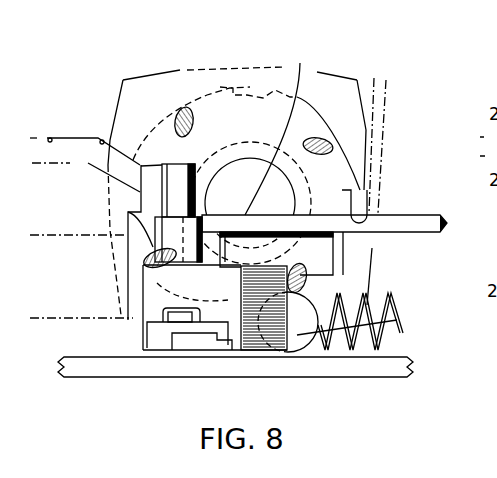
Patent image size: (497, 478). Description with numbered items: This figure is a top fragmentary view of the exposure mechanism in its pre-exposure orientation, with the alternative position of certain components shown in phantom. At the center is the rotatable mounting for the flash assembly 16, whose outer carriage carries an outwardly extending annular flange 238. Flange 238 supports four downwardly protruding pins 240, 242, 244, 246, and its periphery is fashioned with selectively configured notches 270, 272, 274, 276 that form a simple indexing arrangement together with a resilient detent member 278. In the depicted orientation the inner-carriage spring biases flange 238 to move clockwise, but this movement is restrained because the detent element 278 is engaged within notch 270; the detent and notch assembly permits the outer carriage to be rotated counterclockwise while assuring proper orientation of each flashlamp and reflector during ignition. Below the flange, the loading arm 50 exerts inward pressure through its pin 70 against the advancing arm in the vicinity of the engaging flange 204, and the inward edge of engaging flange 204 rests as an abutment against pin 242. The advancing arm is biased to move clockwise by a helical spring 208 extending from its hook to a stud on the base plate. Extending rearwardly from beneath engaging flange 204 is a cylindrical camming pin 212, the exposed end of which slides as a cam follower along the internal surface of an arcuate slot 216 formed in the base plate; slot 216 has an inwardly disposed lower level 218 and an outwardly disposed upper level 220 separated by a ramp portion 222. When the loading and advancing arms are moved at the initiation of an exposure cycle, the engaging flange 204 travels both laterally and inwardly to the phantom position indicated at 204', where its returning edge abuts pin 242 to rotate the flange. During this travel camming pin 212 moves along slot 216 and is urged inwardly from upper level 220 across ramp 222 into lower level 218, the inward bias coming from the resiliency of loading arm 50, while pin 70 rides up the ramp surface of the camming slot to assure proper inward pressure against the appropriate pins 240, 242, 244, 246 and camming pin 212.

The flash assembly 16 is at (320, 70).
The loading arm 50 is at (300, 383).
The pin 70 is at (181, 352).
The engaging flange 204 is at (192, 308).
The engaging flange in moved position 204' is at (80, 324).
The helical spring 208 is at (392, 296).
The camming pin 212 is at (197, 187).
The slot 216 is at (75, 136).
The lower level 218 is at (47, 138).
The upper level 220 is at (298, 72).
The ramp portion 222 is at (107, 133).
The annular flange 238 is at (210, 97).
The pin 240 is at (303, 295).
The pin 242 is at (127, 213).
The pin 244 is at (180, 107).
The pin 246 is at (333, 143).
The notch 270 is at (353, 210).
The notch 272 is at (205, 327).
The notch 274 is at (140, 195).
The notch 276 is at (246, 93).
The resilient detent member 278 is at (383, 117).